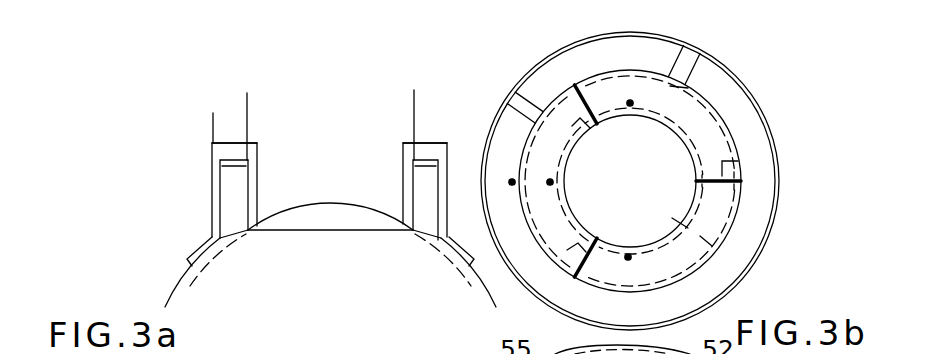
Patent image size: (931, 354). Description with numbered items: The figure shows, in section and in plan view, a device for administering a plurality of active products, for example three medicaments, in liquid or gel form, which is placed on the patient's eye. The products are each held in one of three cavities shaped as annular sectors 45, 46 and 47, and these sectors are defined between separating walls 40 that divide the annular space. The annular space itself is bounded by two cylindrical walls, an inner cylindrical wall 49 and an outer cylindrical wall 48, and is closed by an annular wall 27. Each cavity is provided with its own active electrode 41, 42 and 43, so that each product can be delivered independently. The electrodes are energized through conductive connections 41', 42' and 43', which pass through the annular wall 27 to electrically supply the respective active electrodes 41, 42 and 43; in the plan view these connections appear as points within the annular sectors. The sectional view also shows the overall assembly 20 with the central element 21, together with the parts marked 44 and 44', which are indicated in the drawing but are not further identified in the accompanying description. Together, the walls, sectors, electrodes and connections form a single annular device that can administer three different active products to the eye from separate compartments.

In FIG. 3A, the sensor assembly 20 is at (322, 276).
In FIG. 3A, the lens / window 21 is at (298, 232).
In FIG. 3A, the annular wall 27 is at (232, 142).
In FIG. 3B, the separating walls 40 is at (740, 163).
In FIG. 3A, the active electrode 41 is at (393, 191).
In FIG. 3B, the active electrode 41 is at (594, 147).
In FIG. 3A, the conductive connection 41' is at (331, 117).
In FIG. 3B, the conductive connection 41' is at (585, 179).
In FIG. 3B, the active electrode 42 is at (720, 47).
In FIG. 3B, the conductive connection 42' is at (652, 136).
In FIG. 3B, the active electrode 43 is at (651, 206).
In FIG. 3B, the conductive connection 43' is at (612, 234).
In FIG. 3A, the shell / housing 44 is at (294, 266).
In FIG. 3B, the shell / housing 44 is at (617, 165).
In FIG. 3A, the pin 44' is at (173, 125).
In FIG. 3B, the pin 44' is at (483, 207).
In FIG. 3A, the annular sector 45 is at (231, 186).
In FIG. 3B, the annular sector 45 is at (518, 90).
In FIG. 3B, the annular sector 46 is at (672, 86).
In FIG. 3B, the annular sector 47 is at (700, 241).
In FIG. 3A, the outer cylindrical wall 48 is at (212, 210).
In FIG. 3A, the inner cylindrical wall 49 is at (252, 190).